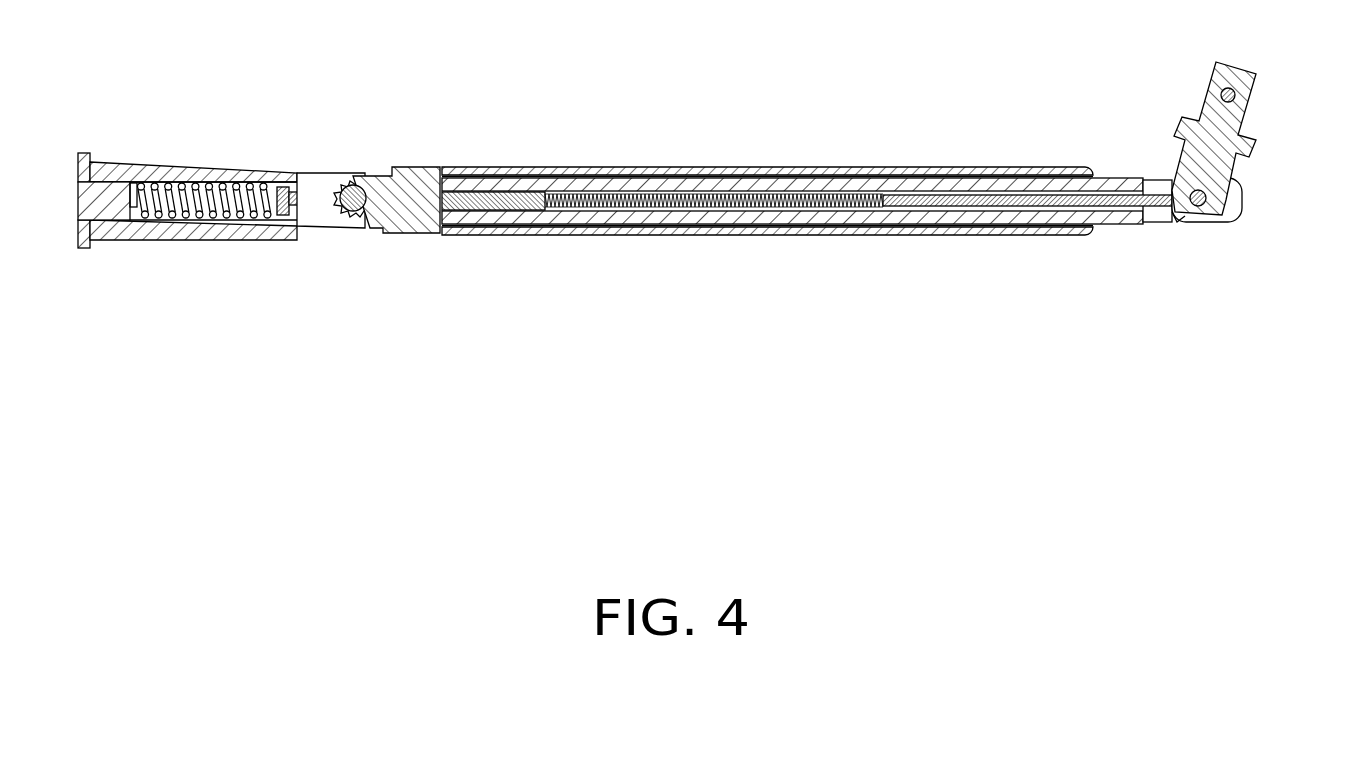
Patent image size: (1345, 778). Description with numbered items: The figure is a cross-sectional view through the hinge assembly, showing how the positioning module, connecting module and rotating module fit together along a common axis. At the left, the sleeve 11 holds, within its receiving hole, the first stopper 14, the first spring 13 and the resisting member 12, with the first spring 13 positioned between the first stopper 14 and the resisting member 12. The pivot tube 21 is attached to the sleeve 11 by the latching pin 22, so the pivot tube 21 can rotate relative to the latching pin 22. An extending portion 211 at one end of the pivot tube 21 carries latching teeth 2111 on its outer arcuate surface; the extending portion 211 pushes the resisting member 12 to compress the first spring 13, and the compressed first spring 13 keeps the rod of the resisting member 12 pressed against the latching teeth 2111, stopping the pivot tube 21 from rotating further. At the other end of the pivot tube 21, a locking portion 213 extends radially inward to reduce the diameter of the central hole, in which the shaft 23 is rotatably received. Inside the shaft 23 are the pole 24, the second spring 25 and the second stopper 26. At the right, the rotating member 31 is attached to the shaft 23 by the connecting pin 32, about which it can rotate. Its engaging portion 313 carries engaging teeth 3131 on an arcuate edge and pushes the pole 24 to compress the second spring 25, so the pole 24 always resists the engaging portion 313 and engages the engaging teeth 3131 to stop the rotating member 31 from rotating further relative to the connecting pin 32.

The sleeve 11 is at (153, 170).
The resisting member 12 is at (306, 232).
The first spring 13 is at (205, 228).
The first stopper 14 is at (110, 208).
The pivot tube 21 is at (412, 168).
The extending portion 211 is at (353, 184).
The latching teeth 2111 is at (318, 177).
The latching pin 22 is at (365, 230).
The shaft 23 is at (966, 185).
The locking portion 213 is at (1107, 230).
The pole 24 is at (905, 203).
The second spring 25 is at (617, 203).
The second stopper 26 is at (507, 200).
The rotating member 31 is at (1207, 122).
The engaging portion 313 is at (1227, 223).
The engaging teeth 3131 is at (1177, 223).
The connecting pin 32 is at (1206, 193).